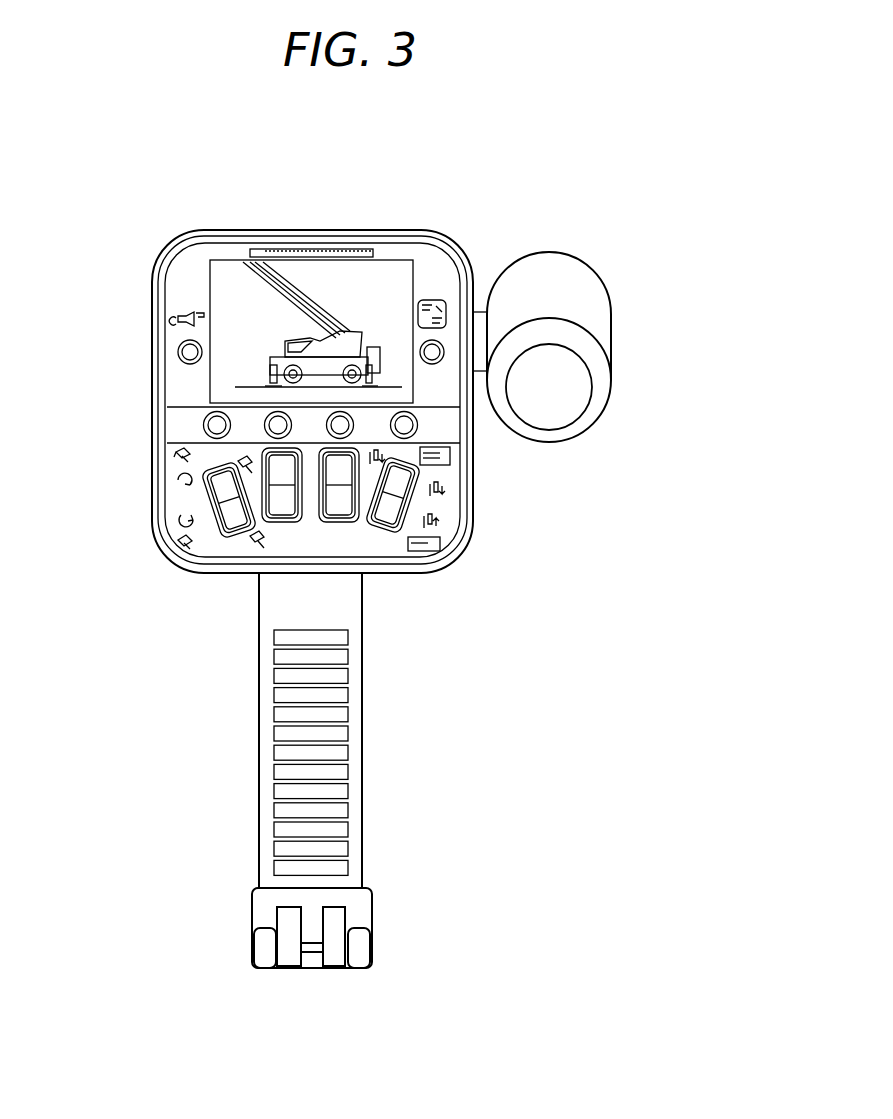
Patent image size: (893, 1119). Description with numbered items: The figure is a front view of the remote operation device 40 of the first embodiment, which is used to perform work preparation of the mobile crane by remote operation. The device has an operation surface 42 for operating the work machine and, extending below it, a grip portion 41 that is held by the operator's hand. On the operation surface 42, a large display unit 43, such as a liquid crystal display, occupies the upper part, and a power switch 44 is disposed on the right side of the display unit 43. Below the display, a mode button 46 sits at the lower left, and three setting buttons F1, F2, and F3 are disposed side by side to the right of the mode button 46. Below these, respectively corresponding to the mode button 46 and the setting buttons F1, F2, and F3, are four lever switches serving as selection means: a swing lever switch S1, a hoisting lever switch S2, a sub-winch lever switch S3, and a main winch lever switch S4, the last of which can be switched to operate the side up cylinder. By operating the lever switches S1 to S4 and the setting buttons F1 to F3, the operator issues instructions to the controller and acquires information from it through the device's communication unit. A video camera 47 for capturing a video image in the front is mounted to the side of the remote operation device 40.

The remote operation device 40 is at (616, 246).
The grip portion 41 is at (360, 831).
The operation surface 42 is at (183, 508).
The display unit 43 is at (298, 268).
The power switch 44 is at (437, 302).
The mode button 46 is at (216, 424).
The video camera 47 is at (611, 330).
The setting button F1 is at (278, 424).
The setting button F2 is at (341, 424).
The setting button F3 is at (406, 424).
The swing lever switch S1 is at (230, 500).
The hoisting lever switch S2 is at (285, 488).
The sub-winch lever switch S3 is at (338, 490).
The main winch lever switch S4 is at (392, 498).